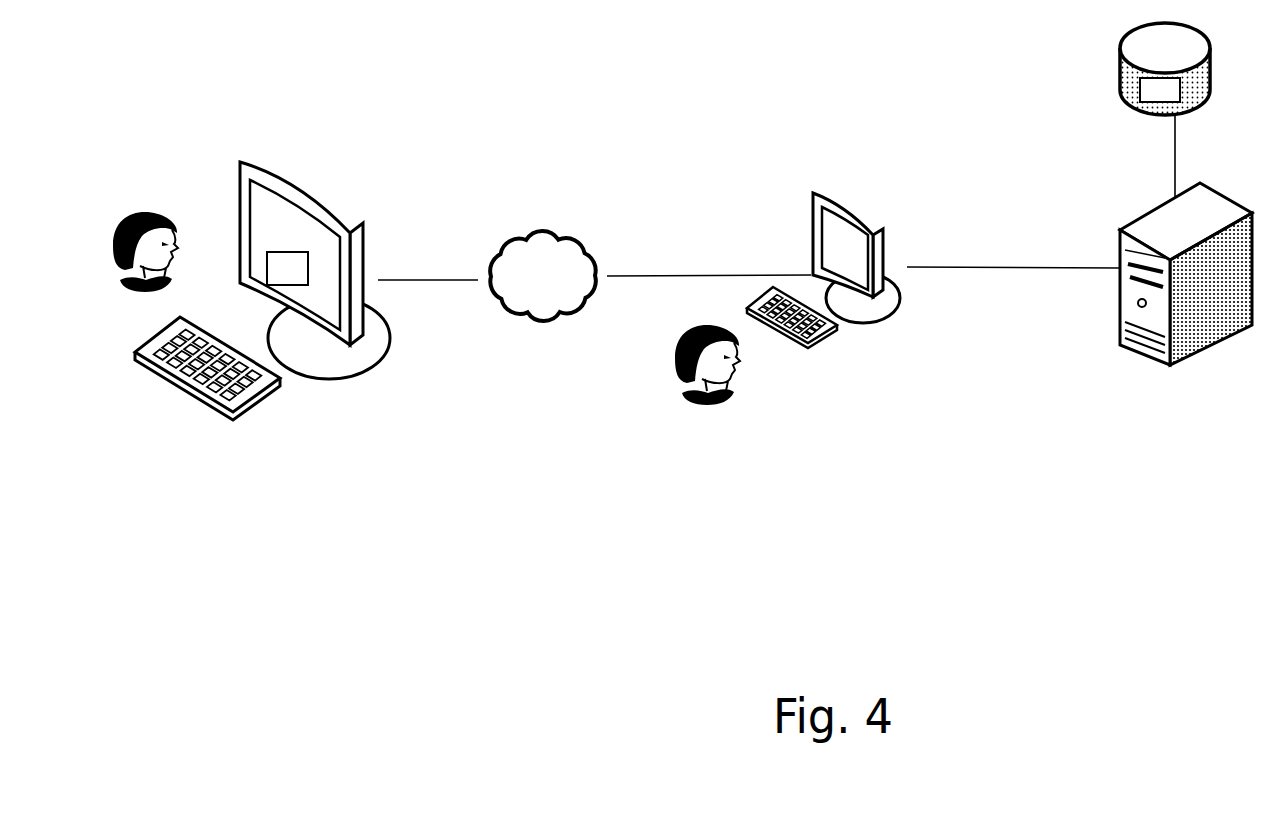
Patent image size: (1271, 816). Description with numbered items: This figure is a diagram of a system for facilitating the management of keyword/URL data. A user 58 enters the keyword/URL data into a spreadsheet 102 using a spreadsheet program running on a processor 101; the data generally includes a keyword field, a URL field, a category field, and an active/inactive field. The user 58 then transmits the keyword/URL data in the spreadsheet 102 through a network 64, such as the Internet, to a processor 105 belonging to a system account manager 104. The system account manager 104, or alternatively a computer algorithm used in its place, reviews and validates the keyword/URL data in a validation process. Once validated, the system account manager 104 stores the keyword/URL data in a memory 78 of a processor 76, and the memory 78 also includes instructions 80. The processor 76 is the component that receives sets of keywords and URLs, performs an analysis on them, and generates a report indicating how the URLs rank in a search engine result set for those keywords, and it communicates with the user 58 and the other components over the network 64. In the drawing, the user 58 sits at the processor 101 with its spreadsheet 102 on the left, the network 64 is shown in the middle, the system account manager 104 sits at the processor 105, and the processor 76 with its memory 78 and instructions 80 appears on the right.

The user 58 is at (120, 295).
The processor 101 is at (215, 427).
The spreadsheet 102 is at (300, 268).
The network 64 is at (547, 230).
The system account manager 104 is at (703, 410).
The processor 105 is at (840, 335).
The processor 76 is at (1178, 367).
The memory 78 is at (1118, 87).
The instructions 80 is at (1150, 102).